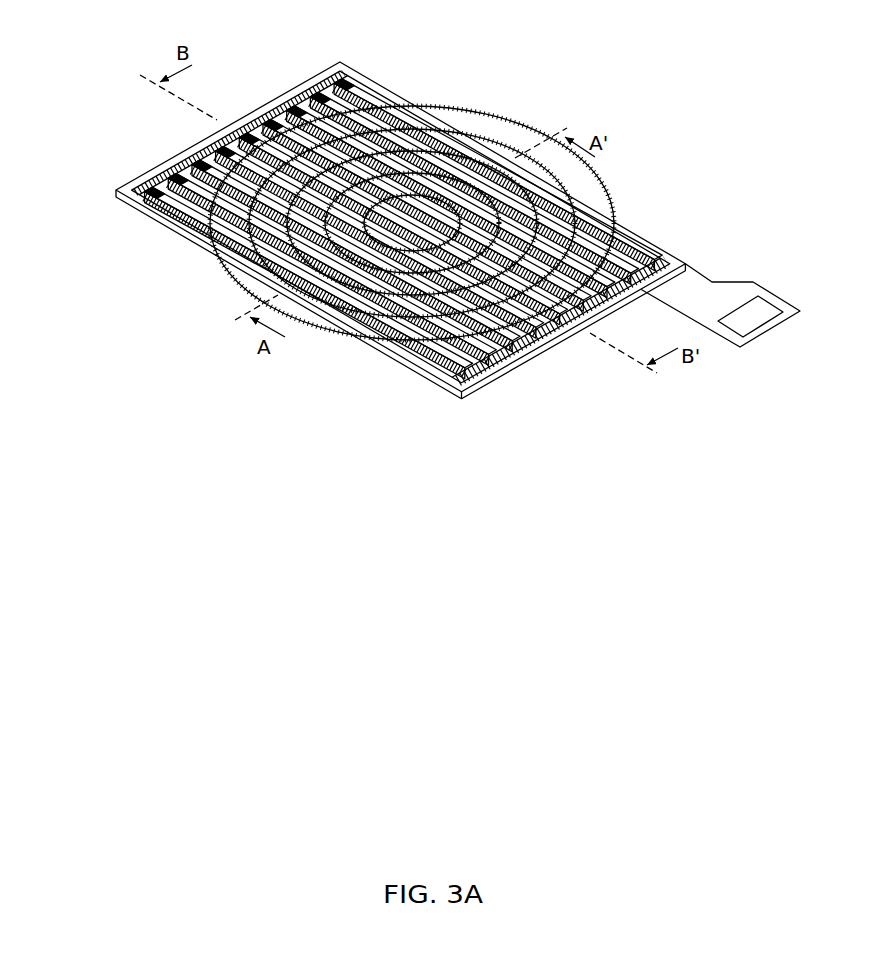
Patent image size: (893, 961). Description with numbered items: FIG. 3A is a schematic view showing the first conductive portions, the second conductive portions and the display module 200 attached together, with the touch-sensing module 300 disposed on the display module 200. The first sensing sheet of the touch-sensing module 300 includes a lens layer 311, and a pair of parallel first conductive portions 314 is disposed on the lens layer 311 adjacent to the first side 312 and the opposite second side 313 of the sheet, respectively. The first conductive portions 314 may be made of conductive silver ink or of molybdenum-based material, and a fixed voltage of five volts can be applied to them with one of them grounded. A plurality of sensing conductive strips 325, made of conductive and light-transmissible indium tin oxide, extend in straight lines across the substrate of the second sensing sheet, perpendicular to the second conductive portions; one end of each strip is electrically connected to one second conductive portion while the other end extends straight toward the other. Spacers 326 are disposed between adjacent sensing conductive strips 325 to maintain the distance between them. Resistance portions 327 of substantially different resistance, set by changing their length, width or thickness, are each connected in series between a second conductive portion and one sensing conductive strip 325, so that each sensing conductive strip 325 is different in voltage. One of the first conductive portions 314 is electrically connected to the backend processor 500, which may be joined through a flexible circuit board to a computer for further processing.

The display module 200 is at (377, 350).
The touch-sensing module 300 is at (365, 247).
The lens layer 311 is at (427, 116).
The first side 312 is at (190, 149).
The second side 313 is at (543, 352).
The first conductive portion 314 is at (297, 95).
The sensing conductive strip 325 is at (183, 228).
The spacer 326 is at (270, 267).
The resistance portion 327 is at (150, 200).
The backend processor 500 is at (773, 322).